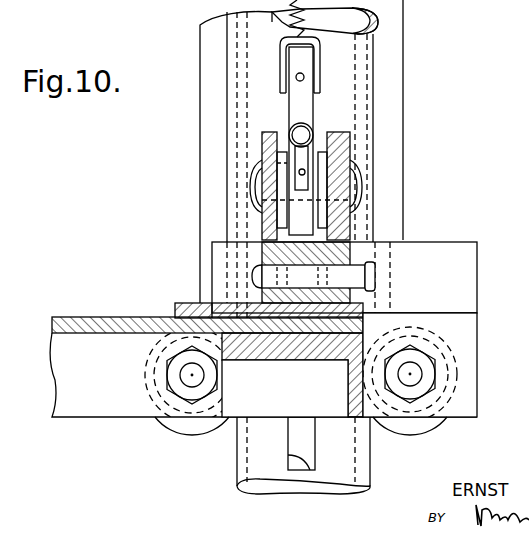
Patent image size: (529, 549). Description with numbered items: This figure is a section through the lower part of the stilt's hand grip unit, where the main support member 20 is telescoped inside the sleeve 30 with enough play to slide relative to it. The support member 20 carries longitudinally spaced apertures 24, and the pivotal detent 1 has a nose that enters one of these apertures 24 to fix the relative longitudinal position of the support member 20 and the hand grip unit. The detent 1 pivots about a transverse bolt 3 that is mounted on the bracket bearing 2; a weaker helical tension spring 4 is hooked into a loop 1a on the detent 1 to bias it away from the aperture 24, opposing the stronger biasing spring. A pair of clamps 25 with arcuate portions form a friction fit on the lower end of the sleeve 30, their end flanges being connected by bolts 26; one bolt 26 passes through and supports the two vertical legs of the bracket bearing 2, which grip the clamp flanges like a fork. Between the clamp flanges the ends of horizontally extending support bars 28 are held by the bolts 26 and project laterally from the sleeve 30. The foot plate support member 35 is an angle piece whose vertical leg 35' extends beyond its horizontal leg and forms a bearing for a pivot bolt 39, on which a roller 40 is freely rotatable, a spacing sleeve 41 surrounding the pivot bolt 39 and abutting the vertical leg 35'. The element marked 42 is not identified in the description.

The pivotal detent 1 is at (318, 60).
The loop 1a is at (303, 103).
The bracket bearing 2 is at (340, 150).
The transverse bolt 3 is at (356, 190).
The helical tension spring 4 is at (312, 133).
The main support member 20 is at (242, 455).
The apertures 24 is at (288, 104).
The clamps 25 is at (222, 259).
The bolts 26 is at (370, 276).
The support bars 28 is at (292, 375).
The sleeve 30 is at (372, 42).
The support member 35 is at (207, 307).
The vertical leg 35' is at (263, 393).
The pivot bolts 39 is at (420, 372).
The rollers 40 is at (428, 419).
The spacing sleeves 41 is at (432, 381).
The wall 42 is at (397, 66).